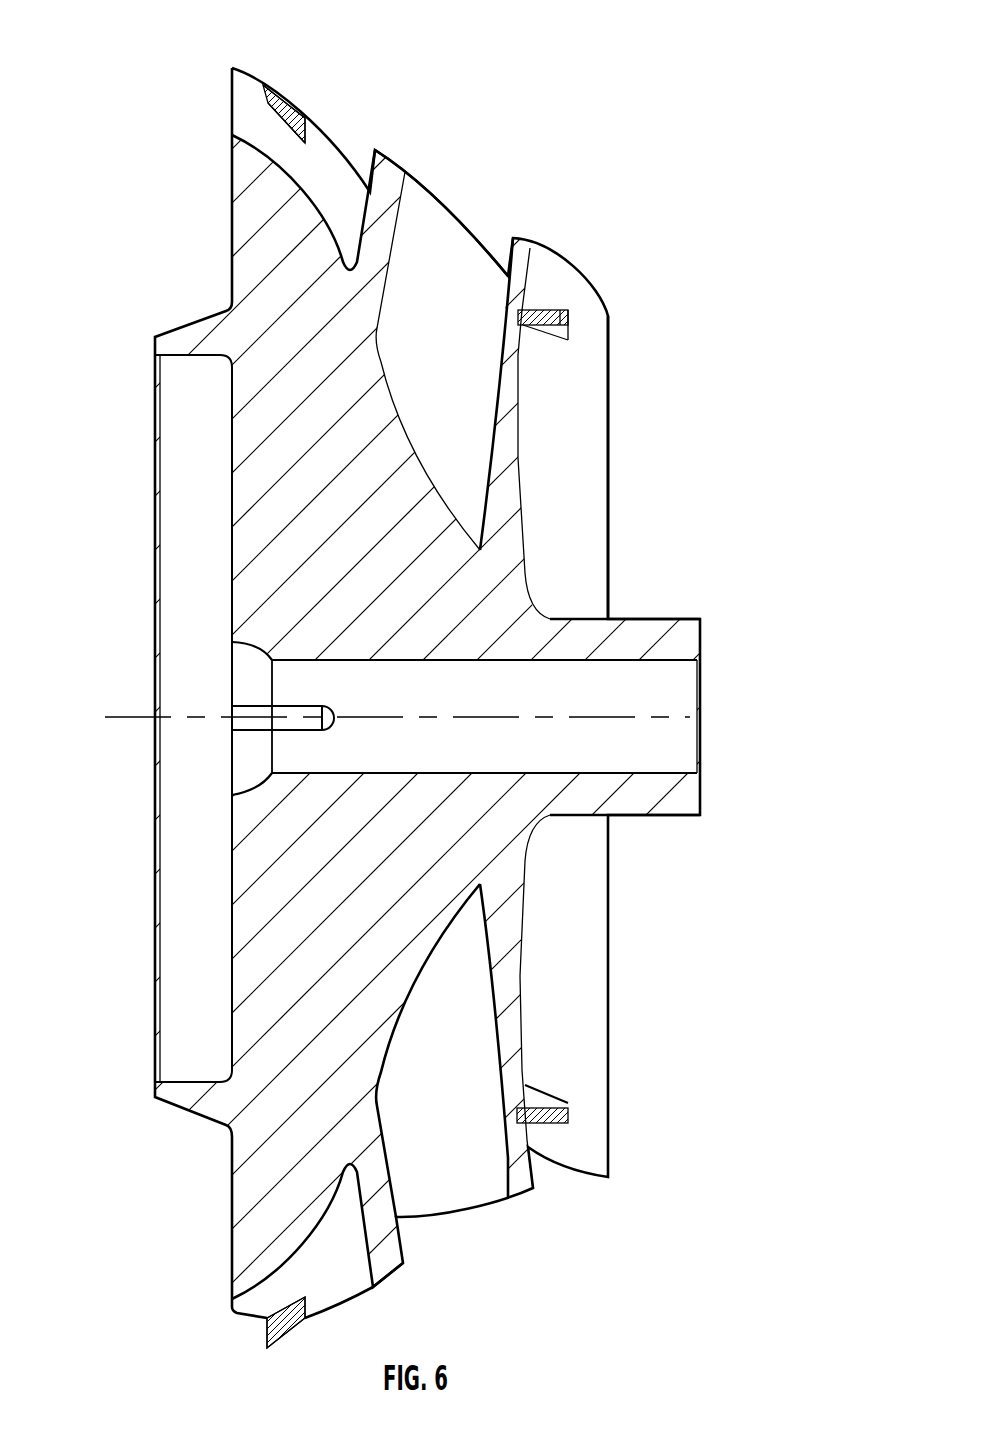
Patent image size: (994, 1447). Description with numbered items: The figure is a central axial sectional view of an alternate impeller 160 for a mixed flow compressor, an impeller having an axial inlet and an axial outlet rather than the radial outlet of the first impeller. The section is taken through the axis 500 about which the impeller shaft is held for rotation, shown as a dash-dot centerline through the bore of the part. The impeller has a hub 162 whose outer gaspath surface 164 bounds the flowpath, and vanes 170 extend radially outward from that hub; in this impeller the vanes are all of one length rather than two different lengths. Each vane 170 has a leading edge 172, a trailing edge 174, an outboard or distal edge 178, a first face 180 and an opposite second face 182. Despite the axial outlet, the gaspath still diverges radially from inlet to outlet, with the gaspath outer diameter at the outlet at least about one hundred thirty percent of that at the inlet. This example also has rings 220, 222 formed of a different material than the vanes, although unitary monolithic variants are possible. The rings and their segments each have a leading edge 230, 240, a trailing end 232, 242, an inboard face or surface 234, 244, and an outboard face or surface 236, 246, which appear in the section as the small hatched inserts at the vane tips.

The impeller 160 is at (593, 135).
The hub 162 is at (460, 820).
The gaspath surface 164 is at (427, 958).
The vane 170 is at (437, 243).
The leading edge 172 is at (610, 490).
The trailing edge 174 is at (232, 97).
The outboard edge 178 is at (424, 190).
The first face 180 is at (457, 1176).
The second face 182 is at (548, 308).
The ring 220 is at (587, 289).
The ring 222 is at (271, 97).
The leading edge 230 is at (569, 321).
The trailing end 232 is at (518, 311).
The inboard face 234 is at (544, 327).
The outboard face 236 is at (562, 305).
The leading edge 240 is at (303, 134).
The trailing end 242 is at (264, 85).
The inboard face 244 is at (290, 122).
The outboard face 246 is at (288, 108).
The axis 500 is at (118, 714).